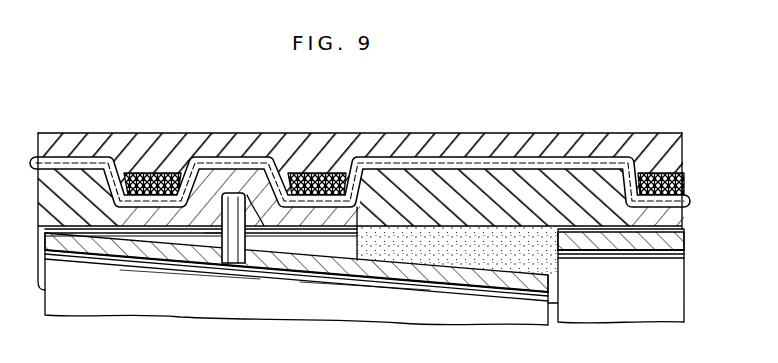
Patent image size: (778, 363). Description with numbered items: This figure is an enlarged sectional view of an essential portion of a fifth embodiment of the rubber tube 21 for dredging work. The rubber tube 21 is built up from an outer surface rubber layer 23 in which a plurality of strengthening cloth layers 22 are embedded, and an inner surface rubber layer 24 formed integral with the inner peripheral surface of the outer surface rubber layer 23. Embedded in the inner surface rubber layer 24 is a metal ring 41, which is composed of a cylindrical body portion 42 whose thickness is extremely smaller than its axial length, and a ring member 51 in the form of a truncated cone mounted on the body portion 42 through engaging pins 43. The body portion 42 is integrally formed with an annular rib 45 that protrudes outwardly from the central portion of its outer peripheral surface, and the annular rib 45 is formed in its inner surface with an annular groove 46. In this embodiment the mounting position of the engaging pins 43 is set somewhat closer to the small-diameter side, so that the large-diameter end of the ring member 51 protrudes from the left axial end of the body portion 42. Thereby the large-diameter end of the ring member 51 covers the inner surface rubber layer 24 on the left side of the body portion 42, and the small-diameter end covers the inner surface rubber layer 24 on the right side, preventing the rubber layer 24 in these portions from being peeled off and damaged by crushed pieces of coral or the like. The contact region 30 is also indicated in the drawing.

The rubber tube 21 is at (507, 131).
The strengthening cloth layers 22 is at (405, 162).
The outer surface rubber layer 23 is at (453, 146).
The inner surface rubber layer 24 is at (80, 187).
The contact region 30 is at (315, 182).
The metal ring 41 is at (362, 243).
The body portion 42 is at (180, 238).
The engaging pin 43 is at (213, 250).
The annular rib 45 is at (243, 182).
The annular groove 46 is at (270, 244).
The ring member 51 is at (399, 268).